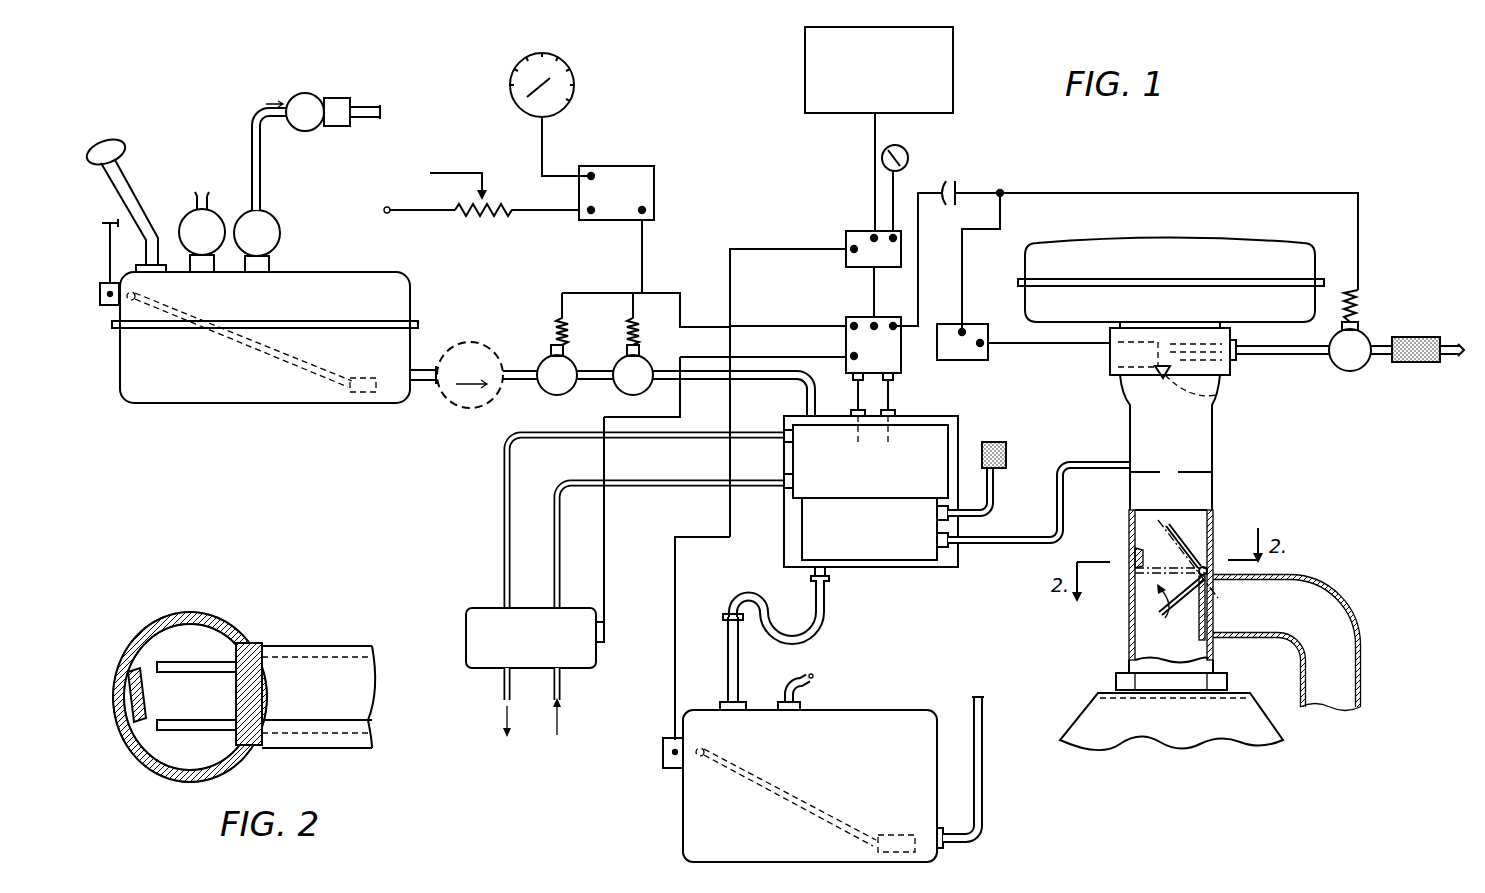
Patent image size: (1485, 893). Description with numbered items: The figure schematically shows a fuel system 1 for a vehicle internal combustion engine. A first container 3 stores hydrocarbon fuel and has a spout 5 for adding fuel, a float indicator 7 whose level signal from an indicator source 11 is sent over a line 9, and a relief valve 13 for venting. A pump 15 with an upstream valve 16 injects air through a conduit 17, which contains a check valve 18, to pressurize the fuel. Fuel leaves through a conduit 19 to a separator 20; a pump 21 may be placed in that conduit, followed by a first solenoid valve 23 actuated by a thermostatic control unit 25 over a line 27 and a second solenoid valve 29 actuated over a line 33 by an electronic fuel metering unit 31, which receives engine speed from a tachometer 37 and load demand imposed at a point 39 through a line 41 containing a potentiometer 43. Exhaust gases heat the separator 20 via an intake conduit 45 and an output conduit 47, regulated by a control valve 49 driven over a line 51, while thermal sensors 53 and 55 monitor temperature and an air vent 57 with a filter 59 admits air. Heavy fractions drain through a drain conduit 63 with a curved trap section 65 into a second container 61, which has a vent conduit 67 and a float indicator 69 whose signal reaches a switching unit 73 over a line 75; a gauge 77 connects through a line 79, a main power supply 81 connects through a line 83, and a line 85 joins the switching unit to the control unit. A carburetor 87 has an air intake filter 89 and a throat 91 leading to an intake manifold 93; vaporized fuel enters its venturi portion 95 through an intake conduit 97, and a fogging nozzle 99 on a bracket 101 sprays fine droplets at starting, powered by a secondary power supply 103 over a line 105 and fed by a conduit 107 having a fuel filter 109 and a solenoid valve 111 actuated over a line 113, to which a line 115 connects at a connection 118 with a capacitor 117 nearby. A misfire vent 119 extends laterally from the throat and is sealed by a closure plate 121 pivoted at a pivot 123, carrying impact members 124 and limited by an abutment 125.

In FIG. 1, the fuel system 1 is at (757, 137).
In FIG. 1, the first container 3 is at (318, 272).
In FIG. 1, the spout 5 is at (127, 172).
In FIG. 1, the float indicator 7 is at (292, 362).
In FIG. 1, the line 9 is at (110, 236).
In FIG. 1, the indicator source 11 is at (100, 296).
In FIG. 1, the relief valve 13 is at (214, 212).
In FIG. 1, the pump 15 is at (300, 131).
In FIG. 1, the valve 16 is at (345, 130).
In FIG. 1, the conduit 17 is at (258, 112).
In FIG. 1, the check valve 18 is at (273, 219).
In FIG. 1, the conduit 19 is at (508, 366).
In FIG. 1, the separator 20 is at (895, 568).
In FIG. 1, the pump 21 is at (488, 340).
In FIG. 1, the first solenoid valve 23 is at (568, 356).
In FIG. 1, the thermostatic control unit 25 is at (902, 365).
In FIG. 1, the line 27 is at (757, 326).
In FIG. 1, the second solenoid valve 29 is at (644, 358).
In FIG. 1, the electronic fuel metering unit 31 is at (613, 167).
In FIG. 1, the line 33 is at (642, 252).
In FIG. 1, the tachometer 37 is at (574, 72).
In FIG. 1, the point 39 is at (388, 193).
In FIG. 1, the line 41 is at (417, 212).
In FIG. 1, the potentiometer 43 is at (494, 217).
In FIG. 1, the intake conduit 45 is at (640, 489).
In FIG. 1, the output conduit 47 is at (640, 440).
In FIG. 1, the control valve 49 is at (592, 672).
In FIG. 1, the line 51 is at (604, 548).
In FIG. 1, the thermal sensor 53 is at (856, 395).
In FIG. 1, the thermal sensor 55 is at (892, 395).
In FIG. 1, the air vent 57 is at (1002, 498).
In FIG. 1, the filter 59 is at (1006, 448).
In FIG. 1, the second container 61 is at (875, 714).
In FIG. 1, the drain conduit 63 is at (740, 665).
In FIG. 1, the curved trap section 65 is at (826, 622).
In FIG. 1, the conduit 67 is at (812, 680).
In FIG. 1, the float indicator 69 is at (810, 815).
In FIG. 1, the switching unit 73 is at (848, 233).
In FIG. 1, the line 75 is at (678, 565).
In FIG. 1, the gauge 77 is at (904, 150).
In FIG. 1, the line 79 is at (896, 192).
In FIG. 1, the main power supply 81 is at (954, 70).
In FIG. 1, the line 83 is at (875, 138).
In FIG. 1, the line 85 is at (874, 295).
In FIG. 1, the carburetor 87 is at (1252, 426).
In FIG. 1, the air intake filter 89 is at (1222, 242).
In FIG. 1, the throat 91 is at (1214, 490).
In FIG. 2, the throat 91 is at (196, 612).
In FIG. 1, the intake manifold 93 is at (1282, 737).
In FIG. 1, the venturi portion 95 is at (1216, 455).
In FIG. 1, the intake conduit 97 is at (982, 548).
In FIG. 1, the fogging nozzle 99 is at (1215, 398).
In FIG. 1, the bracket 101 is at (1236, 370).
In FIG. 1, the secondary power supply 103 is at (988, 358).
In FIG. 1, the line 105 is at (1060, 346).
In FIG. 1, the conduit 107 is at (1448, 362).
In FIG. 1, the fuel filter 109 is at (1415, 337).
In FIG. 1, the solenoid valve 111 is at (1363, 330).
In FIG. 1, the line 113 is at (1112, 194).
In FIG. 1, the line 115 is at (962, 260).
In FIG. 1, the capacitor 117 is at (958, 180).
In FIG. 1, the connection 118 is at (1000, 192).
In FIG. 1, the misfire vent 119 is at (1362, 640).
In FIG. 2, the misfire vent 119 is at (318, 648).
In FIG. 1, the closure plate 121 is at (1208, 608).
In FIG. 2, the closure plate 121 is at (243, 672).
In FIG. 1, the pivot 123 is at (1208, 565).
In FIG. 1, the impact members 124 is at (1165, 616).
In FIG. 2, the impact members 124 is at (186, 720).
In FIG. 1, the abutment 125 is at (1133, 556).
In FIG. 2, the abutment 125 is at (138, 745).